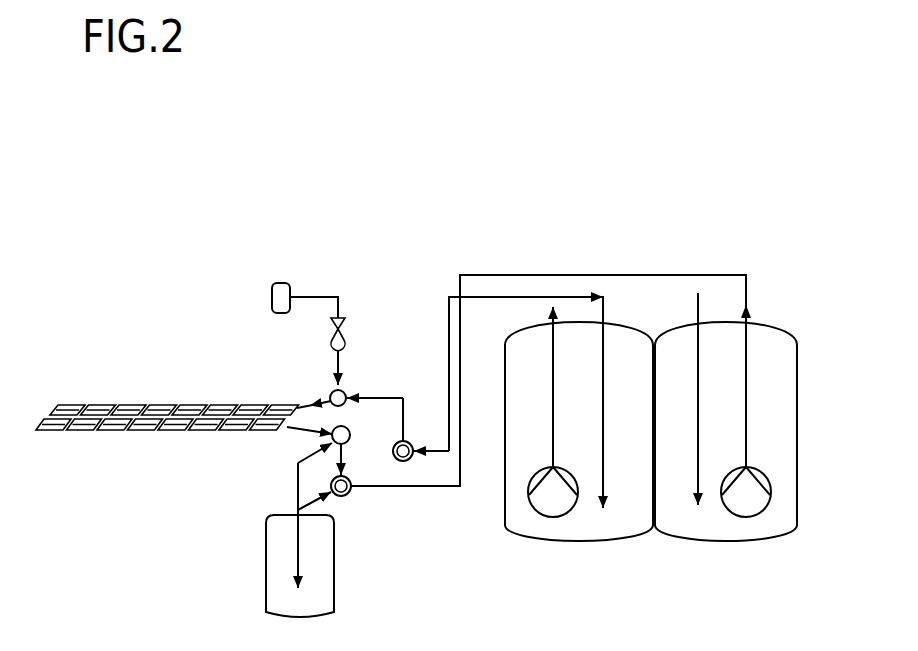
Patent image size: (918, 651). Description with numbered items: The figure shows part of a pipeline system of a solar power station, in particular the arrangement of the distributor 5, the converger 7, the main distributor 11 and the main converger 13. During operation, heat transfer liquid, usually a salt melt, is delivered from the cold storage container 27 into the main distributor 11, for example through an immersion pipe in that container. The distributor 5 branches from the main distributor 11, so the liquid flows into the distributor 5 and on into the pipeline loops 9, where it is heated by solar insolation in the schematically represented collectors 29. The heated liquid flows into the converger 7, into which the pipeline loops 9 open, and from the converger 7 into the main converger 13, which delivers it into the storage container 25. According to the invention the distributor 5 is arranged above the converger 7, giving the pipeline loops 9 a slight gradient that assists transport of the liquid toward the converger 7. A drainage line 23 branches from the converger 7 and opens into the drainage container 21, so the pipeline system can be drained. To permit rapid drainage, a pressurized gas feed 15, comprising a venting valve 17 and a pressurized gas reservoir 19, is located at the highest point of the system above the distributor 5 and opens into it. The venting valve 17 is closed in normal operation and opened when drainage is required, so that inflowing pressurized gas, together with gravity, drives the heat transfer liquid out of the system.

The distributor 5 is at (347, 393).
The converger 7 is at (310, 436).
The pipeline loop 9 is at (167, 421).
The main distributor 11 is at (407, 462).
The main converger 13 is at (343, 497).
The pressurized gas feed 15 is at (329, 367).
The venting valve 17 is at (347, 323).
The pressurized gas reservoir 19 is at (275, 282).
The drainage container 21 is at (267, 595).
The drainage line 23 is at (298, 485).
The storage container 25 is at (562, 542).
The cold storage container 27 is at (723, 542).
The collectors 29 is at (157, 431).